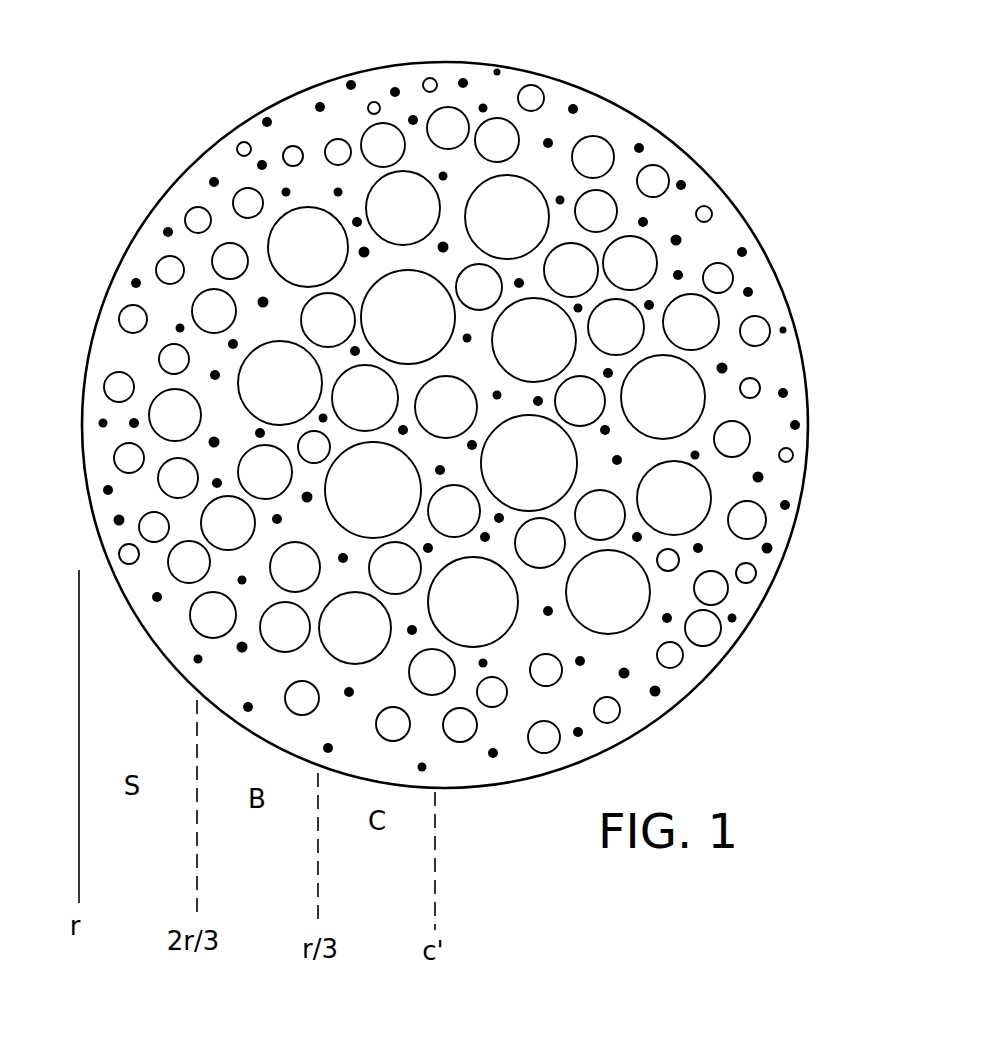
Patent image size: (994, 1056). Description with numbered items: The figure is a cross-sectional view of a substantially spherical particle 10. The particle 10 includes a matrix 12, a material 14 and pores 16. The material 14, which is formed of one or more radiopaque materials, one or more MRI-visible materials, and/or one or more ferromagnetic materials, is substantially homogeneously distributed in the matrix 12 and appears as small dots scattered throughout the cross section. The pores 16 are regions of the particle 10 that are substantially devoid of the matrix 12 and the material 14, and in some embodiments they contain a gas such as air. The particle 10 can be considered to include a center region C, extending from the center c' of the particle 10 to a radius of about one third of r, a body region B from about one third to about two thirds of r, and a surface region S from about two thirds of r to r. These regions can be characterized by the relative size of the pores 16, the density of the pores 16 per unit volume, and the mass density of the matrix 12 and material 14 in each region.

The particle 10 is at (171, 111).
The matrix 12 is at (715, 237).
The material 14 is at (758, 477).
The pores 16 is at (495, 137).